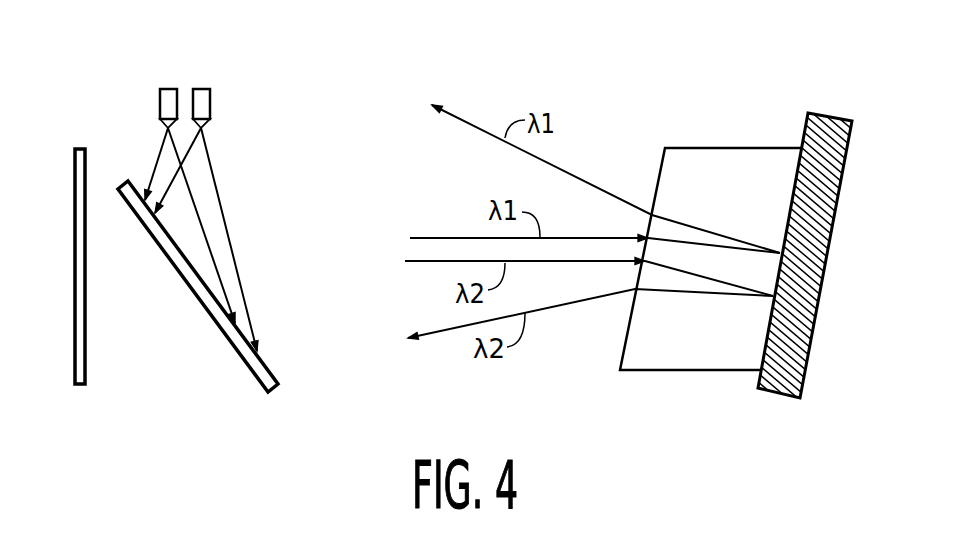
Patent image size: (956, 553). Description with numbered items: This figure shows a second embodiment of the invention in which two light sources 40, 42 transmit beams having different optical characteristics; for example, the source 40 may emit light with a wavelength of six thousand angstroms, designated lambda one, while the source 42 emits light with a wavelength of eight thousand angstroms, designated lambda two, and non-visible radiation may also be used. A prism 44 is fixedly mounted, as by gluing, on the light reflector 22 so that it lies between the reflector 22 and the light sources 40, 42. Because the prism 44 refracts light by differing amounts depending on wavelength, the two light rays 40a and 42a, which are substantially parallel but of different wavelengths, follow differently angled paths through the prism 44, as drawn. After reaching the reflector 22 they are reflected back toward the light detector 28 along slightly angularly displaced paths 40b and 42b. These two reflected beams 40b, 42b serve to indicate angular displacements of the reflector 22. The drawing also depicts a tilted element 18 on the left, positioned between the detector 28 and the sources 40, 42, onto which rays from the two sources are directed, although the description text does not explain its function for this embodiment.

The scanning mirror 18 is at (207, 313).
The light reflector 22 is at (827, 170).
The light detector 28 is at (73, 352).
The light source 40 is at (174, 87).
The light source 42 is at (200, 87).
The light ray 40a is at (438, 237).
The reflected beam 40b is at (462, 122).
The light ray 42a is at (428, 263).
The reflected beam 42b is at (457, 327).
The prism 44 is at (718, 163).